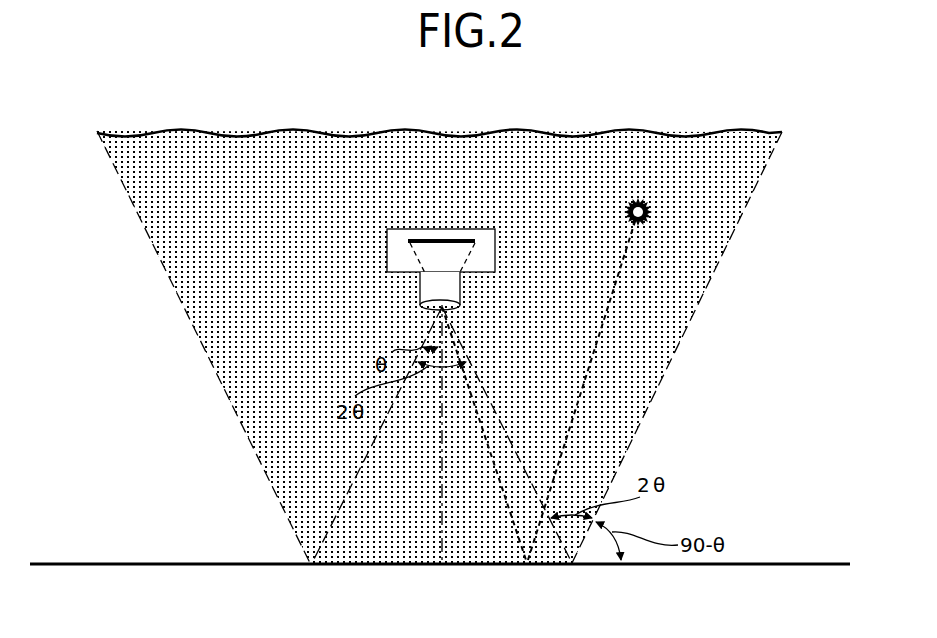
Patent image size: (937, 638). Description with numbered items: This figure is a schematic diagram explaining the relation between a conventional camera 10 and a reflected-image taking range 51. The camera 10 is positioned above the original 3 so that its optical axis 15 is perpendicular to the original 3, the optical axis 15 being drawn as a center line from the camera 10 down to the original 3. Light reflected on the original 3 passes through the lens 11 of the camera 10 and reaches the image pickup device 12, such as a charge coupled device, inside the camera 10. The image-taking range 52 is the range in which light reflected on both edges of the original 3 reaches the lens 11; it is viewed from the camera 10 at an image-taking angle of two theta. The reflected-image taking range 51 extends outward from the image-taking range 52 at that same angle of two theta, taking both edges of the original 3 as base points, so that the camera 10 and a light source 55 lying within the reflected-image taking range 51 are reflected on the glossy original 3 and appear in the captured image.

The original 3 is at (387, 562).
The camera 10 is at (450, 229).
The lens 11 is at (453, 312).
The image pickup device 12 is at (428, 240).
The optical axis 15 is at (447, 520).
The reflected-image taking range 51 is at (700, 155).
The image-taking range 52 is at (393, 452).
The light source 55 is at (634, 199).